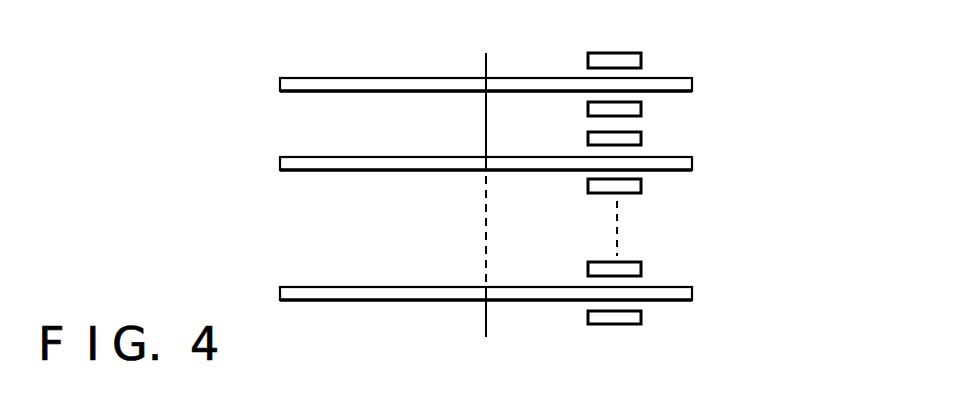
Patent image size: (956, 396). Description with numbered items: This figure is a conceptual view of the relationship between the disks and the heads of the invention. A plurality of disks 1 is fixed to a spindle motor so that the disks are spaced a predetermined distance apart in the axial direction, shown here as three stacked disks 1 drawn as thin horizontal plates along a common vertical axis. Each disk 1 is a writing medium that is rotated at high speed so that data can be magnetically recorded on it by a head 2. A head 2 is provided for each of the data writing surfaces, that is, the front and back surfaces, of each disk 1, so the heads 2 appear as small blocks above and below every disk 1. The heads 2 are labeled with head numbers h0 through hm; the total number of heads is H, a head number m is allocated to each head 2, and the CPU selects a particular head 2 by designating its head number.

The disk 1 is at (342, 78).
The head 2 is at (677, 171).